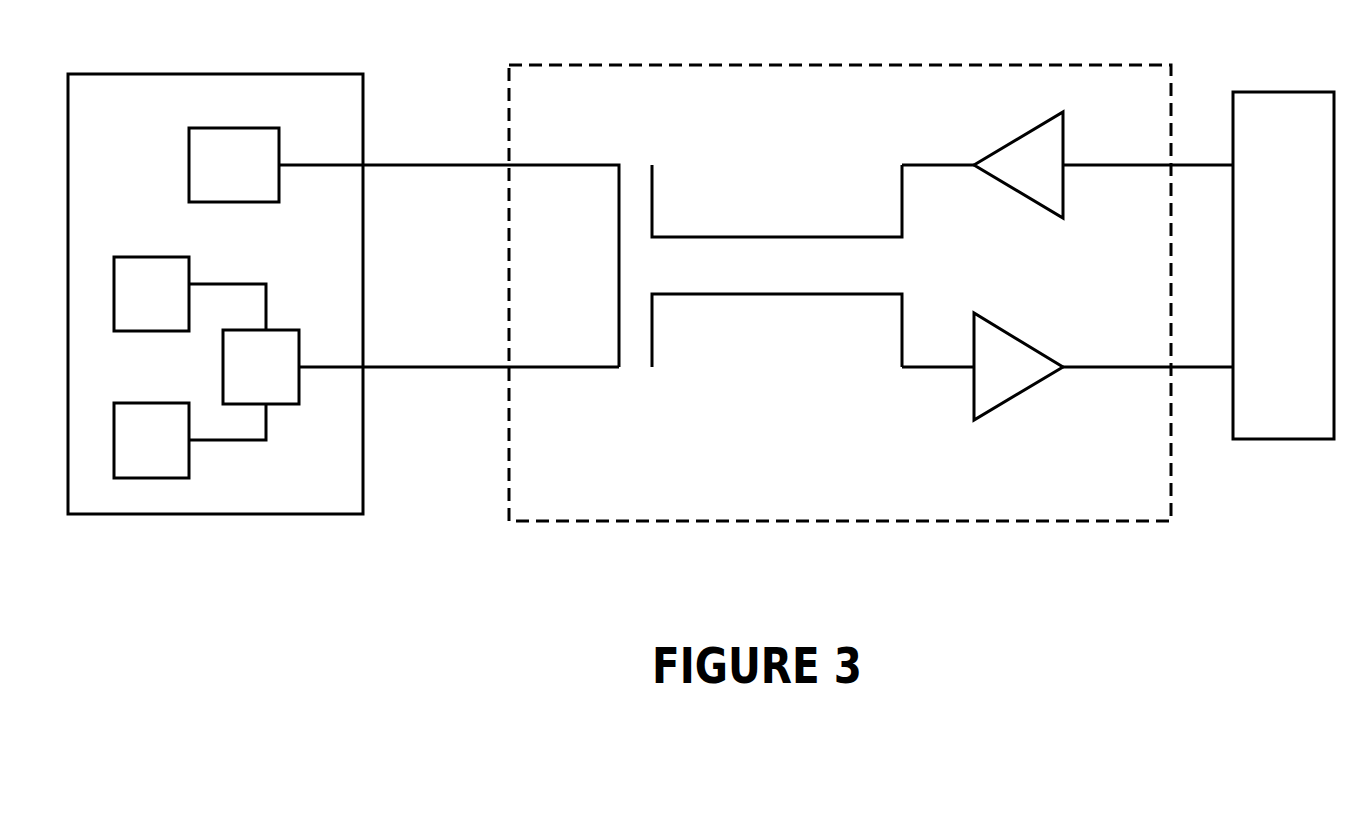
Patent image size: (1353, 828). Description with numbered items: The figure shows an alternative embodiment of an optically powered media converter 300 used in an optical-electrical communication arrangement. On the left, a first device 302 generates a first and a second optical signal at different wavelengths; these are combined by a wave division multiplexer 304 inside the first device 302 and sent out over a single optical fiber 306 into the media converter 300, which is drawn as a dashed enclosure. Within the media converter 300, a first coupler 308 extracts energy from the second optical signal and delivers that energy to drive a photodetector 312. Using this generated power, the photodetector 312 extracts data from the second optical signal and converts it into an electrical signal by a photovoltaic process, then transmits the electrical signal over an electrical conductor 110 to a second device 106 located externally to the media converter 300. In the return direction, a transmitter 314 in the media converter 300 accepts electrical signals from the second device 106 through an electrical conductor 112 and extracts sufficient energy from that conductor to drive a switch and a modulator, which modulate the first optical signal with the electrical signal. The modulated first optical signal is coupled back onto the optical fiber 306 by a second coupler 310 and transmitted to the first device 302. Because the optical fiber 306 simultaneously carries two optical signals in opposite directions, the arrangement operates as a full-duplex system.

The first device 302 is at (215, 294).
The wave division multiplexer 304 is at (261, 367).
The optically powered media converter 300 is at (840, 293).
The optical fiber 306 is at (425, 368).
The first optical coupler 308 is at (653, 337).
The second optical coupler 310 is at (653, 185).
The photodetector 312 is at (1018, 338).
The transmitter 314 is at (1010, 142).
The electrical conductor 112 is at (1097, 163).
The electrical conductor 110 is at (1095, 366).
The second device 106 is at (1283, 265).